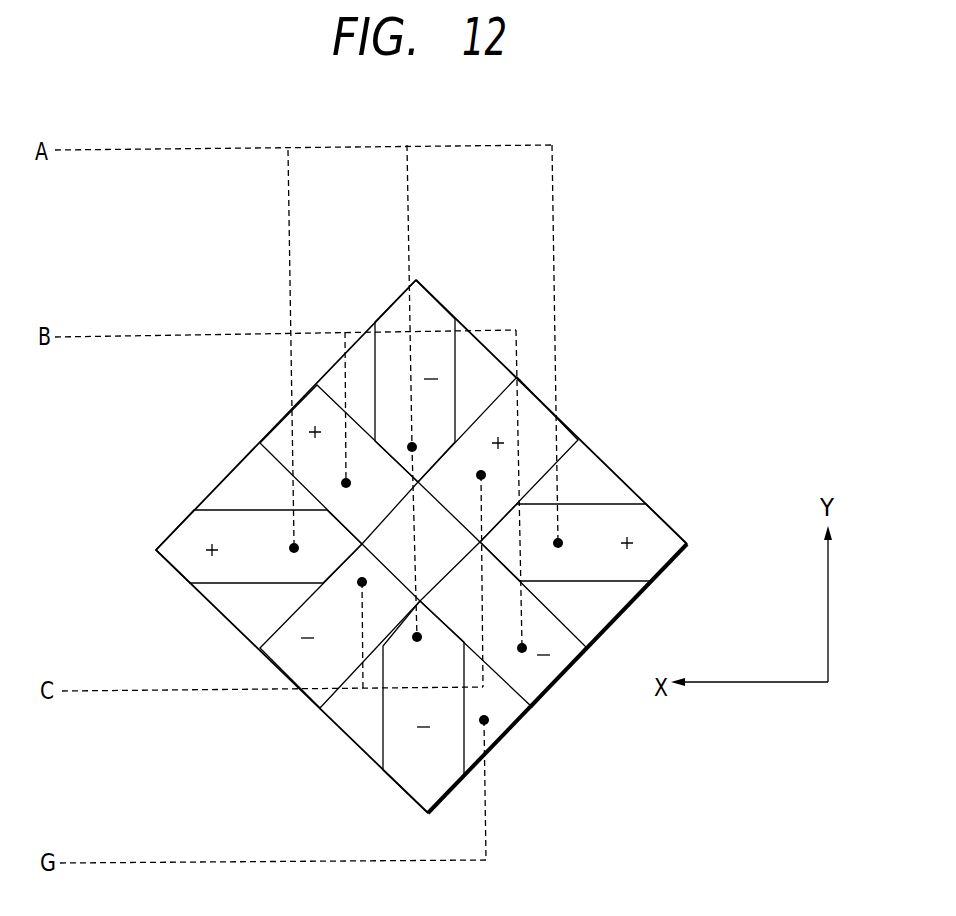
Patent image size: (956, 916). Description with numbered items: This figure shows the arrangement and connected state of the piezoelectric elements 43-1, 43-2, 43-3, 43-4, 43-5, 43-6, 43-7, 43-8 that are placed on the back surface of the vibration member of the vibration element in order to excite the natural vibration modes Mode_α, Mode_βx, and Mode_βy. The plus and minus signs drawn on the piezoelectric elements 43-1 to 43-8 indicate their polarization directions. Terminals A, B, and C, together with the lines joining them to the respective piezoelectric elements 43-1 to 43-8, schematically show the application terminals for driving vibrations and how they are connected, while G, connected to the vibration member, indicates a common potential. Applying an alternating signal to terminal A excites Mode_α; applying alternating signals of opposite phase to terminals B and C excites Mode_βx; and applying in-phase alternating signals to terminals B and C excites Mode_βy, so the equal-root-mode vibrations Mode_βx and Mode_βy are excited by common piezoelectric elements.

The piezoelectric element 43-1 is at (229, 546).
The piezoelectric element 43-2 is at (419, 365).
The piezoelectric element 43-3 is at (606, 542).
The piezoelectric element 43-4 is at (403, 707).
The piezoelectric element 43-5 is at (320, 464).
The piezoelectric element 43-6 is at (515, 459).
The piezoelectric element 43-7 is at (514, 624).
The piezoelectric element 43-8 is at (314, 626).